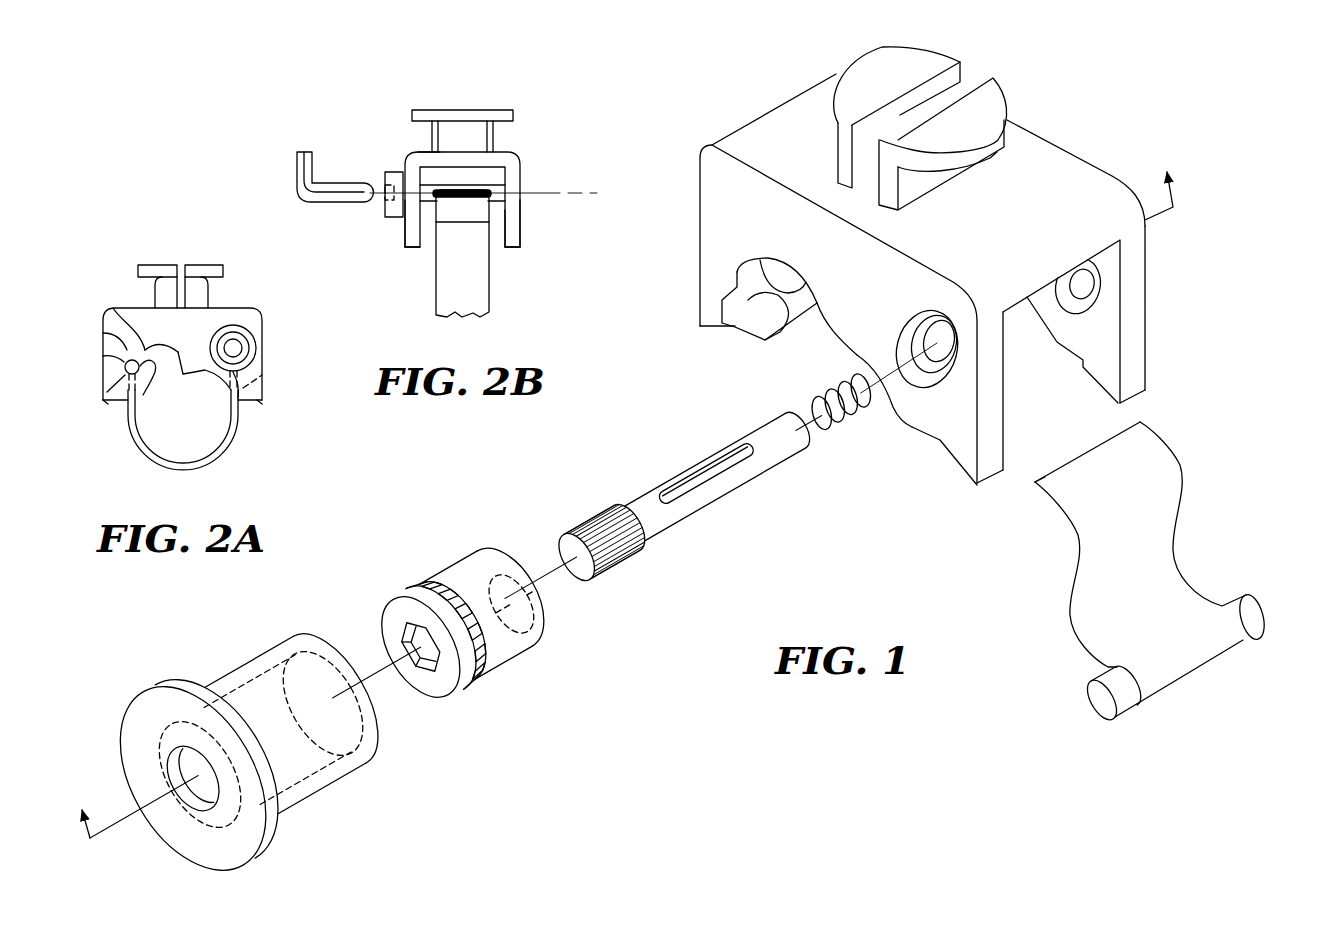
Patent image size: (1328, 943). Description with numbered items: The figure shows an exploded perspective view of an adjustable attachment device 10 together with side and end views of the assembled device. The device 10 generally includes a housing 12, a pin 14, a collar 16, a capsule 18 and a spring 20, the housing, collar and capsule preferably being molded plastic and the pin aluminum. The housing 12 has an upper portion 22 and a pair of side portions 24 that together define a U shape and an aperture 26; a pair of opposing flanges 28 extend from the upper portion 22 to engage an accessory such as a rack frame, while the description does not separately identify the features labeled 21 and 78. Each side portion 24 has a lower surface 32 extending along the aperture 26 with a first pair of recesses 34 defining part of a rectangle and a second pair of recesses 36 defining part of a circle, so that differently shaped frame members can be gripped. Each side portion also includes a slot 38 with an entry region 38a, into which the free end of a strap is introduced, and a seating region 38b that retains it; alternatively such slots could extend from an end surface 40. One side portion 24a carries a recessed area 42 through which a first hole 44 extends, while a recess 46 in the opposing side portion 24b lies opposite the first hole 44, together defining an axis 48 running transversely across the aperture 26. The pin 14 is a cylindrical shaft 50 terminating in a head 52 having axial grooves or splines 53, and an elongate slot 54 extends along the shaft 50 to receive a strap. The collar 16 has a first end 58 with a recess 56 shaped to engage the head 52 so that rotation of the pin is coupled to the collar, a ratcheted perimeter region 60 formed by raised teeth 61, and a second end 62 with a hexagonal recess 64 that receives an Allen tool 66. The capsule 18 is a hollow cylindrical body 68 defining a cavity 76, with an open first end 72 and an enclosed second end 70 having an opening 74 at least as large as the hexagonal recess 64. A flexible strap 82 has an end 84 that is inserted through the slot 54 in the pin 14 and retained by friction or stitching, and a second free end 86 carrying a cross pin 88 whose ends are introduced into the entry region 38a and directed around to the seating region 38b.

In FIG. 2A, the adjustable attachment device 10 is at (101, 303).
In FIG. 2B, the adjustable attachment device 10 is at (522, 107).
In FIG. 1, the adjustable attachment device 10 is at (630, 682).
In FIG. 2A, the housing 12 is at (100, 375).
In FIG. 2B, the housing 12 is at (521, 152).
In FIG. 1, the housing 12 is at (1058, 142).
In FIG. 2B, the pin 14 is at (483, 137).
In FIG. 1, the pin 14 is at (712, 505).
In FIG. 1, the collar 16 is at (478, 543).
In FIG. 1, the capsule 18 is at (150, 688).
In FIG. 1, the spring 20 is at (818, 386).
In FIG. 1, the top wall 21 is at (747, 128).
In FIG. 2B, the upper portion 22 is at (420, 152).
In FIG. 2A, the side portions 24 is at (112, 357).
In FIG. 2B, the side portion 24a is at (405, 232).
In FIG. 1, the side portion 24a is at (706, 175).
In FIG. 2B, the opposing side portion 24b is at (521, 208).
In FIG. 1, the opposing side portion 24b is at (1150, 358).
In FIG. 2B, the aperture 26 is at (502, 235).
In FIG. 1, the aperture 26 is at (1008, 420).
In FIG. 2A, the opposing flanges 28 is at (200, 266).
In FIG. 2B, the opposing flanges 28 is at (457, 110).
In FIG. 1, the opposing flanges 28 is at (903, 142).
In FIG. 2A, the lower surface 32 is at (116, 405).
In FIG. 2B, the lower surface 32 is at (410, 250).
In FIG. 1, the lower surface 32 is at (1147, 387).
In FIG. 2A, the first pair of recesses 34 is at (143, 396).
In FIG. 2A, the second pair of recesses 36 is at (184, 380).
In FIG. 1, the slot 38 is at (728, 328).
In FIG. 2A, the entry region 38a is at (180, 358).
In FIG. 2A, the seating region 38b is at (120, 308).
In FIG. 2A, the end surface 40 is at (103, 330).
In FIG. 1, the recessed or raised area 42 is at (905, 384).
In FIG. 1, the first hole 44 is at (898, 332).
In FIG. 1, the recess 46 is at (1112, 306).
In FIG. 2B, the axis 48 is at (550, 192).
In FIG. 1, the axis 48 is at (110, 830).
In FIG. 1, the shaft 50 is at (682, 472).
In FIG. 1, the head 52 is at (578, 522).
In FIG. 1, the grooves or splines 53 is at (620, 560).
In FIG. 2B, the elongate slot 54 is at (447, 190).
In FIG. 1, the elongate slot 54 is at (697, 478).
In FIG. 1, the recess 56 is at (530, 648).
In FIG. 1, the first end 58 is at (550, 624).
In FIG. 1, the ratcheted perimeter region 60 is at (478, 680).
In FIG. 1, the raised teeth 61 is at (416, 575).
In FIG. 1, the second end 62 is at (395, 605).
In FIG. 1, the hexagonal shaped recess 64 is at (382, 620).
In FIG. 2B, the Allen tool 66 is at (350, 184).
In FIG. 1, the cylindrical body 68 is at (330, 795).
In FIG. 1, the second end 70 is at (160, 835).
In FIG. 1, the open first end 72 is at (380, 745).
In FIG. 1, the opening 74 is at (132, 728).
In FIG. 1, the cavity 76 is at (246, 660).
In FIG. 2B, the hole 78 is at (386, 185).
In FIG. 1, the hole 78 is at (160, 783).
In FIG. 2A, the flexible strap 82 is at (138, 458).
In FIG. 2B, the flexible strap 82 is at (485, 265).
In FIG. 1, the flexible strap 82 is at (1138, 597).
In FIG. 2A, the first end 84 is at (262, 375).
In FIG. 2B, the first end 84 is at (460, 224).
In FIG. 1, the first end 84 is at (1045, 518).
In FIG. 2A, the second free end 86 is at (108, 385).
In FIG. 1, the second free end 86 is at (1096, 667).
In FIG. 2A, the cross pin 88 is at (120, 344).
In FIG. 1, the cross pin 88 is at (1098, 705).